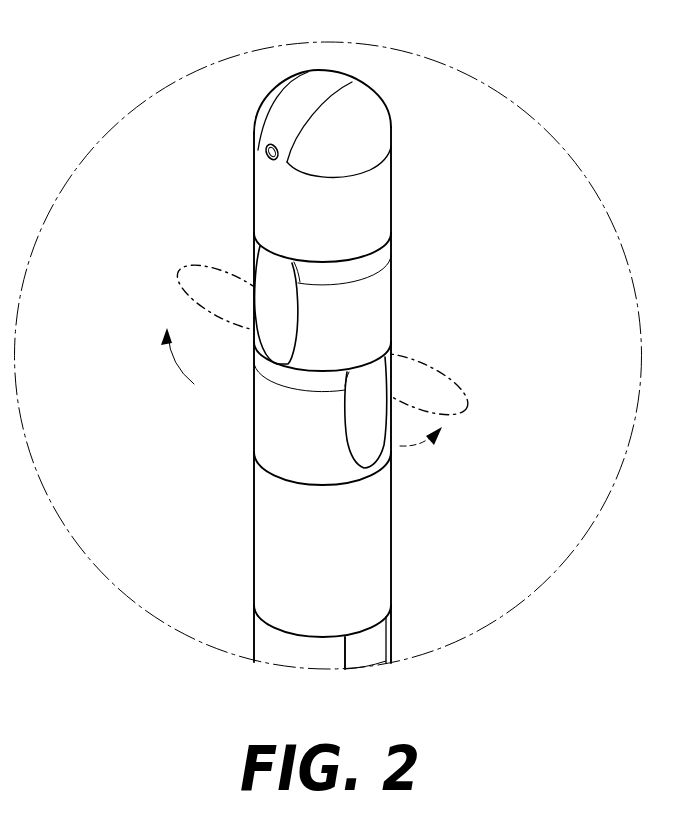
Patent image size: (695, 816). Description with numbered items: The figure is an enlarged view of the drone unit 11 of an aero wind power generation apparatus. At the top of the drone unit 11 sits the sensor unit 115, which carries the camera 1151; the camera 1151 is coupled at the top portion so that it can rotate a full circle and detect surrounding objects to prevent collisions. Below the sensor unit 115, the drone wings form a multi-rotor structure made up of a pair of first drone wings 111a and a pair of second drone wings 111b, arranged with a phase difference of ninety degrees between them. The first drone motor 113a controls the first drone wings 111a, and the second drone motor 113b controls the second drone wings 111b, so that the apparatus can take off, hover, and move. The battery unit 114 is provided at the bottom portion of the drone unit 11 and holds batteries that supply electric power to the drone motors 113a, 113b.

The drone unit 11 is at (110, 42).
The camera 1151 is at (268, 151).
The sensor unit 115 is at (262, 198).
The first drone motor 113a is at (388, 292).
The first drone wings 111a is at (270, 333).
The second drone motor 113b is at (268, 427).
The second drone wings 111b is at (448, 394).
The battery unit 114 is at (387, 547).